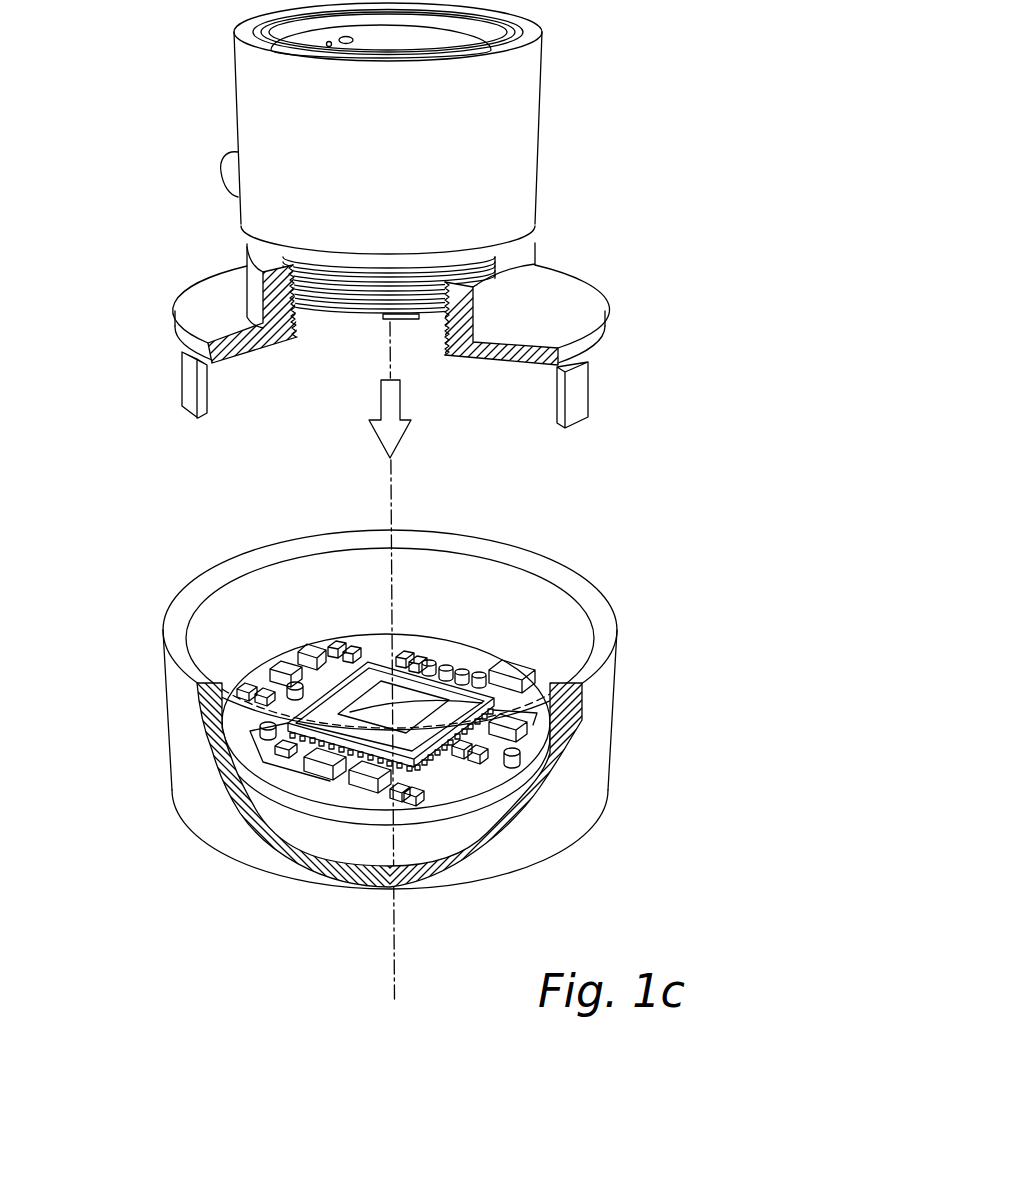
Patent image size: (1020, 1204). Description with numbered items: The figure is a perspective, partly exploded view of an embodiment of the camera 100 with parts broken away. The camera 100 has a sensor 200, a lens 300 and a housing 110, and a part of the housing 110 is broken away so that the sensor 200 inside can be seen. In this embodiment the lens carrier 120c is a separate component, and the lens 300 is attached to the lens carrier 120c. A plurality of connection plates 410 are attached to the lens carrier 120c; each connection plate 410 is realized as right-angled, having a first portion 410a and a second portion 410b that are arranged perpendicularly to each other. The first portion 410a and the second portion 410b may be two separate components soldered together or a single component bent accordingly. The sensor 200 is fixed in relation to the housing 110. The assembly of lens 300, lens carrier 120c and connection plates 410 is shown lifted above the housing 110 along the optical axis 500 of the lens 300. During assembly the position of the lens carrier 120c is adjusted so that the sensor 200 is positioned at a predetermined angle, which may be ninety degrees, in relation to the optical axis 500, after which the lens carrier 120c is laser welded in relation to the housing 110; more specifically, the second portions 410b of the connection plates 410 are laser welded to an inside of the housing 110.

The camera 100 is at (406, 226).
The housing 110 is at (608, 755).
The lens carrier 120c is at (195, 310).
The sensor 200 is at (496, 703).
The lens 300 is at (252, 100).
The connection plates 410 is at (383, 328).
The first portion 410a is at (228, 367).
The second portion 410b is at (187, 380).
The optical axis 500 is at (392, 484).